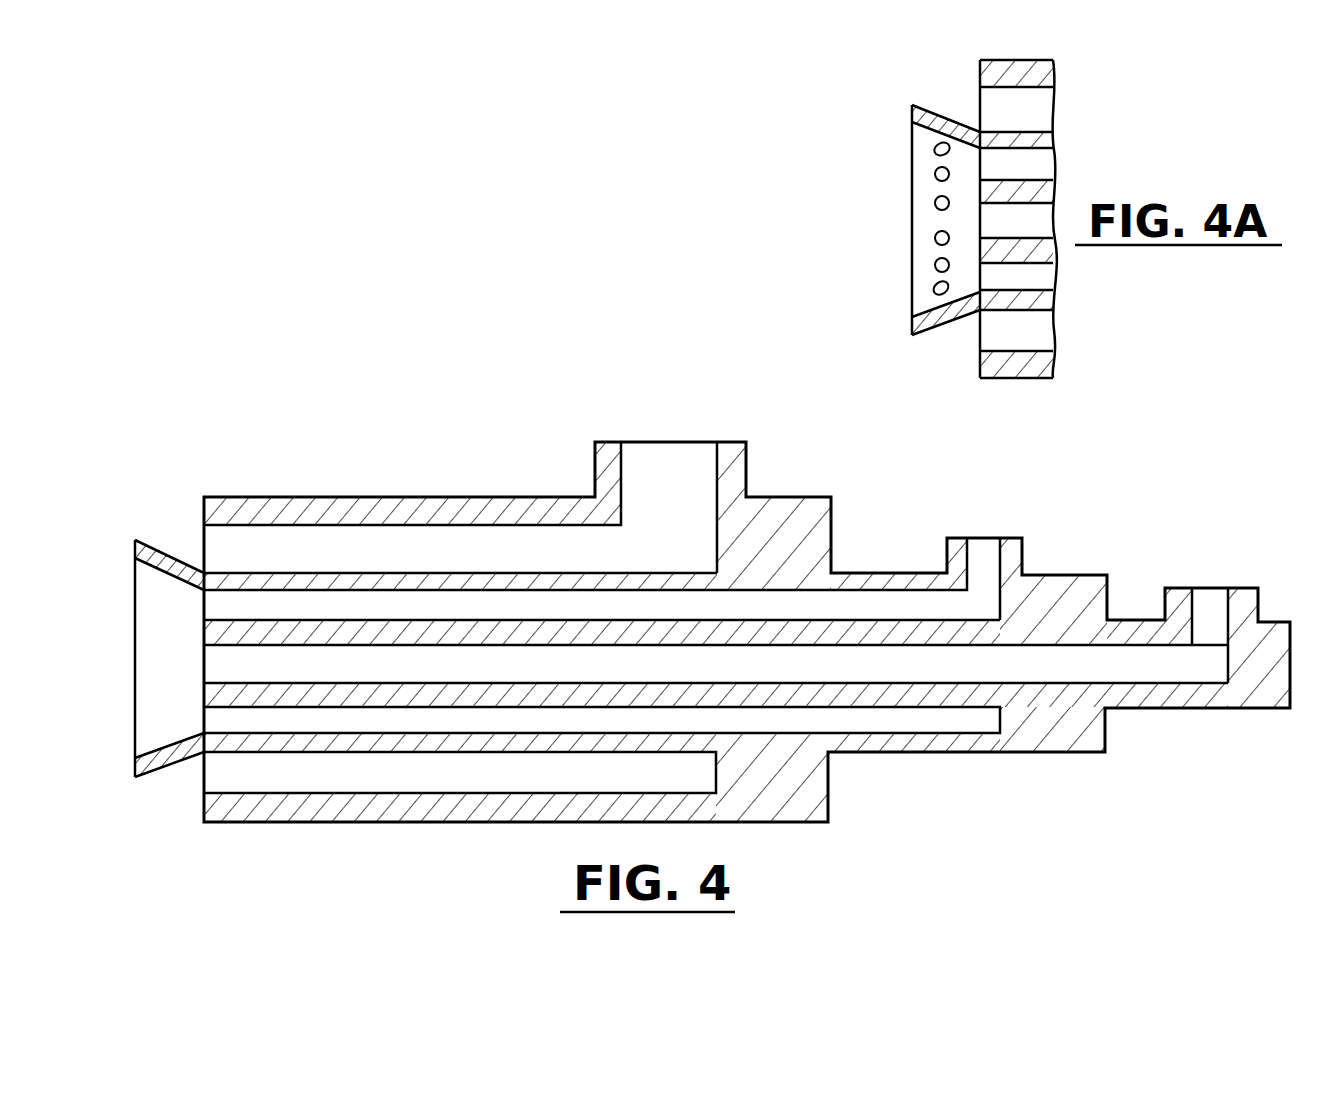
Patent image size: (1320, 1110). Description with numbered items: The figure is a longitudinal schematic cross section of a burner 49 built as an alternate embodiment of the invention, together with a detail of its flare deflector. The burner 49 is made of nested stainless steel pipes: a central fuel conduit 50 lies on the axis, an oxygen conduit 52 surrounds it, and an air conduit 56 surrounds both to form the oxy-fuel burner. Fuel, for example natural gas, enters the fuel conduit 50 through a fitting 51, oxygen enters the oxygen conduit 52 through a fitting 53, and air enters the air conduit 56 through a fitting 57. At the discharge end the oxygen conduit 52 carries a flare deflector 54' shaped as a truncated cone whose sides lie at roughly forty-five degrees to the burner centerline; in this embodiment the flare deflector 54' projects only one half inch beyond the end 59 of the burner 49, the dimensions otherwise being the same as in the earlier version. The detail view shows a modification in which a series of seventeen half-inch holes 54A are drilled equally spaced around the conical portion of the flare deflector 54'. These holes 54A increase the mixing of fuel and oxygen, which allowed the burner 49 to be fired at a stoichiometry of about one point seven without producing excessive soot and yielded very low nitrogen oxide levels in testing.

In FIG. 4, the burner 49 is at (887, 504).
In FIG. 4, the central fuel conduit 50 is at (793, 618).
In FIG. 4, the fitting 51 is at (1225, 588).
In FIG. 4, the oxygen conduit 52 is at (533, 573).
In FIG. 4, the fitting 53 is at (983, 538).
In FIG. 4, the flare deflector 54' is at (163, 622).
In FIG. 4A, the flare deflector 54' is at (976, 205).
In FIG. 4A, the holes 54A is at (933, 202).
In FIG. 4, the air conduit 56 is at (405, 496).
In FIG. 4, the fitting 57 is at (658, 442).
In FIG. 4, the end of the burner 59 is at (204, 808).